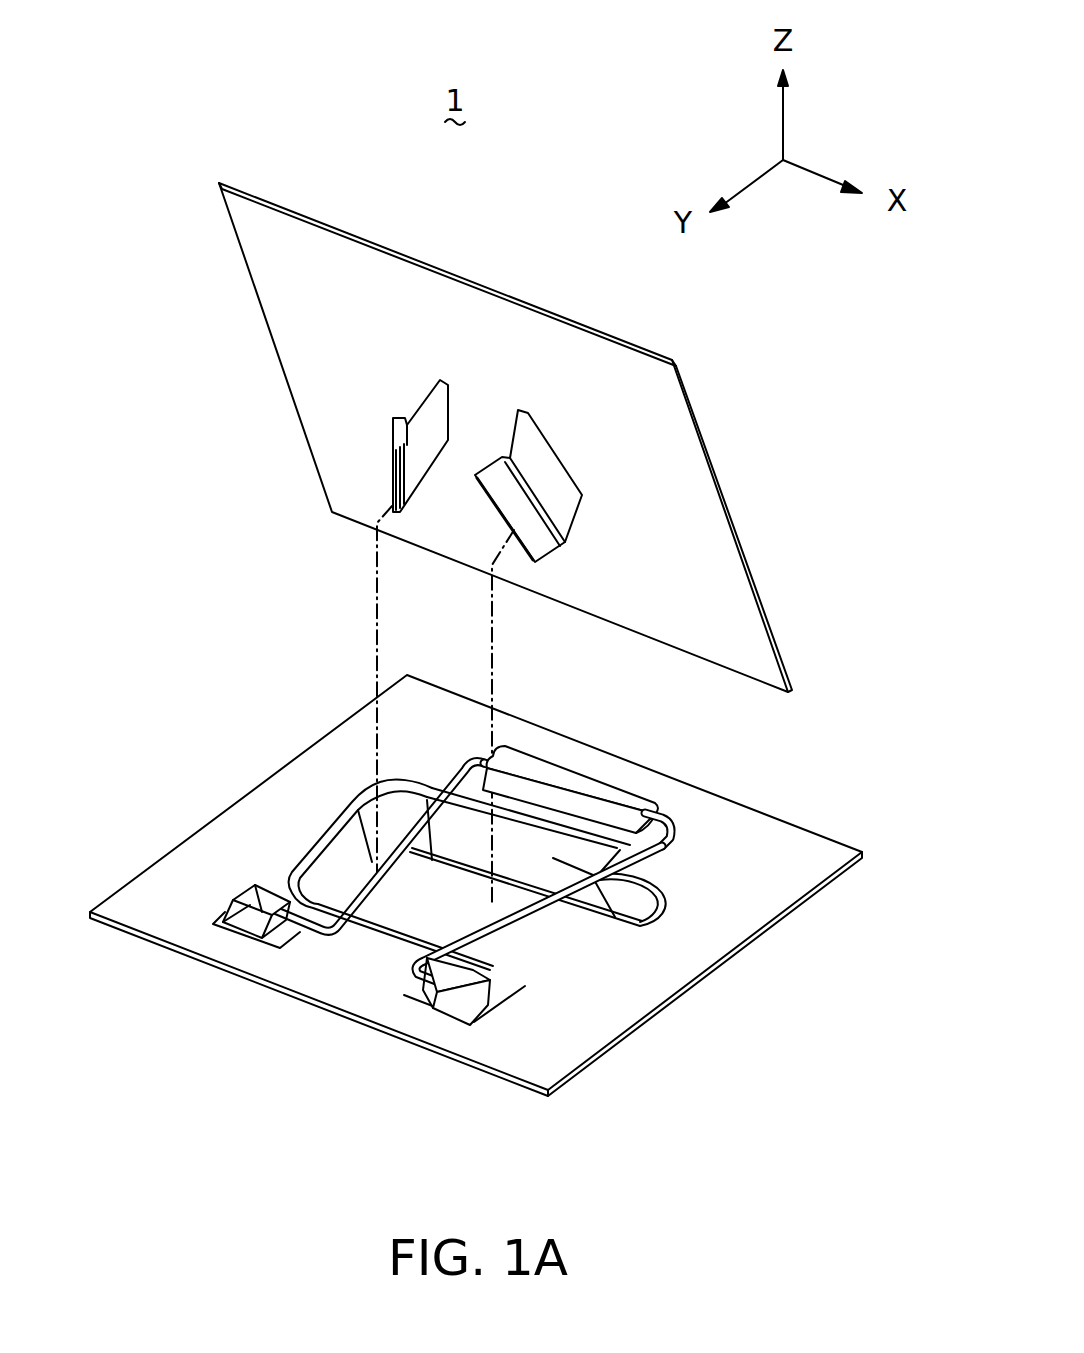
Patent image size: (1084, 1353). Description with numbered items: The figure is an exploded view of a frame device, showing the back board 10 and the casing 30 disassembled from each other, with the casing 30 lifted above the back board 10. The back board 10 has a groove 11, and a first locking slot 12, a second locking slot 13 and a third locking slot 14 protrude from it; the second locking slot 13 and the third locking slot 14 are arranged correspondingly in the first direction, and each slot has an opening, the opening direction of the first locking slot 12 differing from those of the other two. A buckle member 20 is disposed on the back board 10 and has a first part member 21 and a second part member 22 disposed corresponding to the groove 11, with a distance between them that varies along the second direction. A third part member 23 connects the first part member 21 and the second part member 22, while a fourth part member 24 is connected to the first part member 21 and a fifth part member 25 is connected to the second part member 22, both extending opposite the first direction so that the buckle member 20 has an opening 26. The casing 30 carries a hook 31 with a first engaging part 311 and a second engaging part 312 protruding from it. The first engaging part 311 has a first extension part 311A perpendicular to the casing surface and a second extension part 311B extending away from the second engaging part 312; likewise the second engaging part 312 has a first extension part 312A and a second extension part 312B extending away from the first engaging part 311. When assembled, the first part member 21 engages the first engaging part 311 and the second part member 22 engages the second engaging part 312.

The back board 10 is at (830, 850).
The groove 11 is at (402, 923).
The first locking slot 12 is at (598, 786).
The second locking slot 13 is at (248, 892).
The third locking slot 14 is at (500, 1012).
The buckle member 20 is at (423, 843).
The first part member 21 is at (367, 887).
The second part member 22 is at (595, 873).
The third part member 23 is at (652, 830).
The fourth part member 24 is at (280, 923).
The fifth part member 25 is at (440, 955).
The opening 26 is at (348, 940).
The casing 30 is at (670, 401).
The hook 31 is at (362, 496).
The first engaging part 311 is at (279, 446).
The first extension part 311A is at (415, 395).
The second extension part 311B is at (395, 458).
The second engaging part 312 is at (696, 486).
The first extension part 312A is at (548, 478).
The second extension part 312B is at (533, 527).